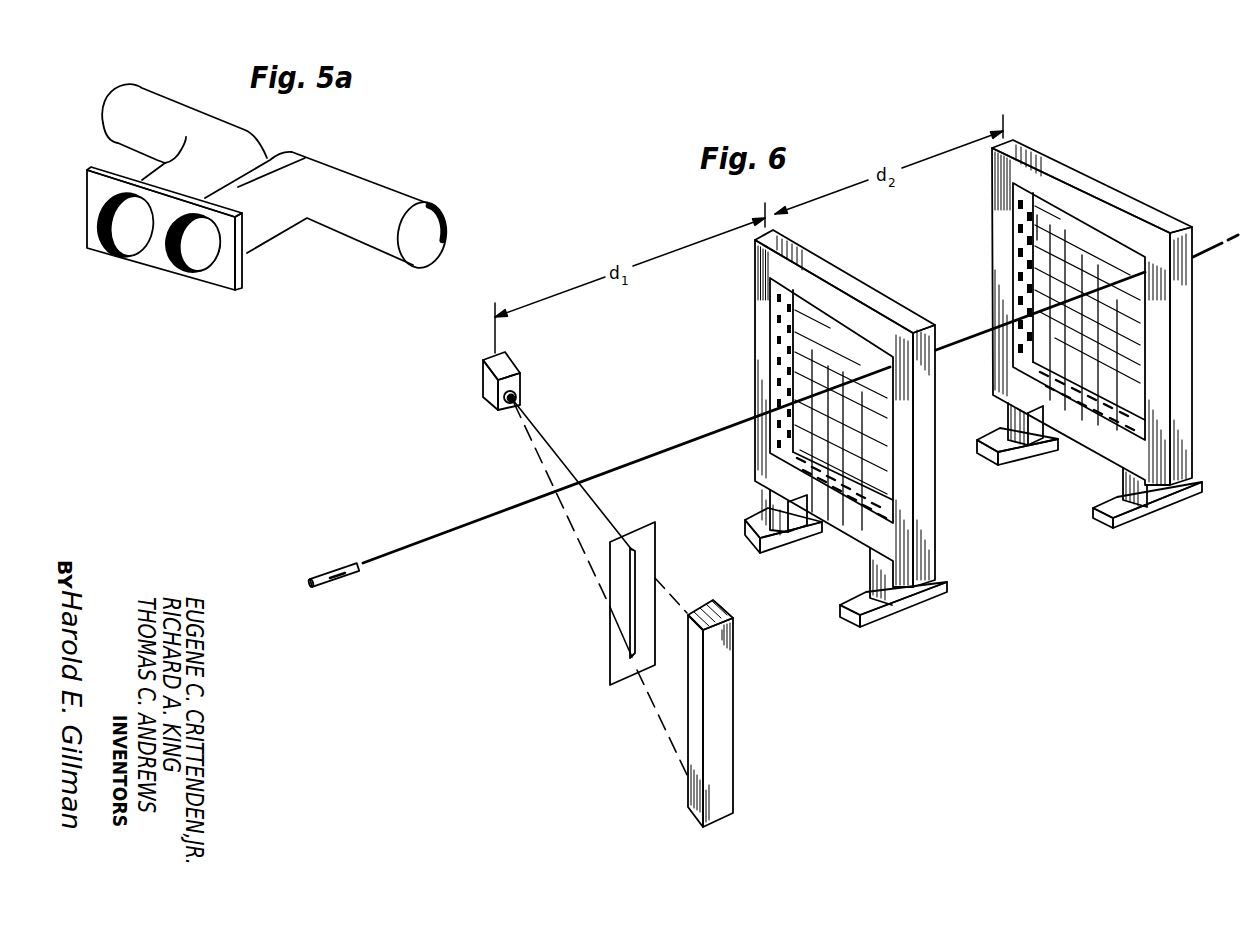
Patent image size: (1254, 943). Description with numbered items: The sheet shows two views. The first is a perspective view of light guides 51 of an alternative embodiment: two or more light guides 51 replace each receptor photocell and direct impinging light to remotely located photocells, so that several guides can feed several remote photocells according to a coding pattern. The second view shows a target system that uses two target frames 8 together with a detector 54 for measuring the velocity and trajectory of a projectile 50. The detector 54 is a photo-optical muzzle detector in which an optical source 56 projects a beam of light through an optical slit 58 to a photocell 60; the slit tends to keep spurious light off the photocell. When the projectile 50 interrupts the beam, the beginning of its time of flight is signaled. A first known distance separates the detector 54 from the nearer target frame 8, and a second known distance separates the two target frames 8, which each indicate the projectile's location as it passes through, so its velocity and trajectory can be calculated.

In FIG. 5A, the light guide 51 is at (163, 264).
In FIG. 6, the target frame 8 is at (924, 537).
In FIG. 6, the projectile 50 is at (323, 575).
In FIG. 6, the detector 54 is at (488, 601).
In FIG. 6, the optical source 56 is at (483, 378).
In FIG. 6, the optical slit 58 is at (612, 650).
In FIG. 6, the photocell 60 is at (725, 745).